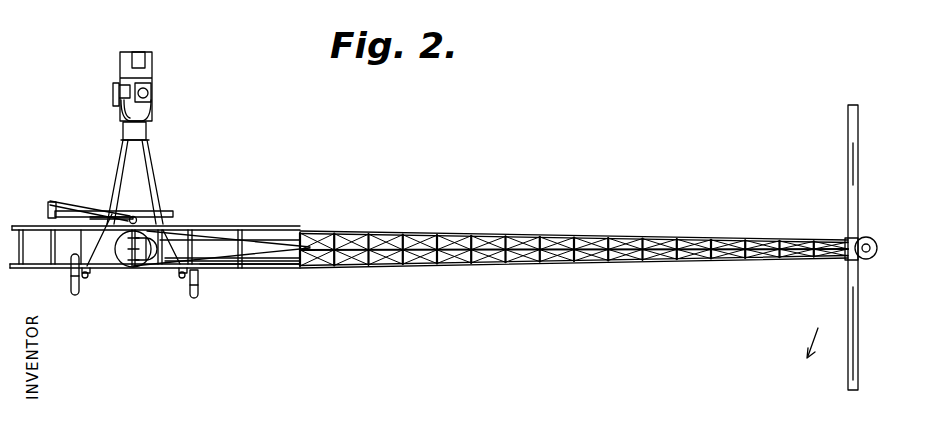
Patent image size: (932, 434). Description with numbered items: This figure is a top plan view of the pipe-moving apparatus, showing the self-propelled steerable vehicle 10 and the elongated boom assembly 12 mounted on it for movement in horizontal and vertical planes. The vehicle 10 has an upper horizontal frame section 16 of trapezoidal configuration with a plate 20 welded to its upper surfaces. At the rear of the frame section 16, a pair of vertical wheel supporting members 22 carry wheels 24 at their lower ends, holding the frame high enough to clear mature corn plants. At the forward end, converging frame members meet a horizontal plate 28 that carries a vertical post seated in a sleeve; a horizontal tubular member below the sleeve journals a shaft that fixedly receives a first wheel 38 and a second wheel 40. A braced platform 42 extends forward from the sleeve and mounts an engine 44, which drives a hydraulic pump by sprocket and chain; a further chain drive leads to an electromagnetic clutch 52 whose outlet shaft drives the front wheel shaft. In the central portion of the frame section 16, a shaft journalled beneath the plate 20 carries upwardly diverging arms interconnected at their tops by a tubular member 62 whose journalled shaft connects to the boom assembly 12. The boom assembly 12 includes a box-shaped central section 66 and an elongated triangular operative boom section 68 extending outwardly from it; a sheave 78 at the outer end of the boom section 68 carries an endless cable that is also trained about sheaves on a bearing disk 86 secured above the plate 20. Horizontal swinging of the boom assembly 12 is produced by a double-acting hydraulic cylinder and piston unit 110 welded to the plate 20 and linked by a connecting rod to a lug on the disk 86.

The self-propelled steerable vehicle 10 is at (166, 158).
The elongated boom assembly 12 is at (329, 211).
The upper horizontal frame section 16 is at (115, 271).
The plate 20 is at (160, 220).
The vertical wheel supporting members 22 is at (72, 283).
The wheels 24 is at (73, 296).
The horizontal plate 28 is at (126, 130).
The first wheel 38 is at (149, 111).
The second wheel 40 is at (119, 113).
The braced platform 42 is at (120, 54).
The engine 44 is at (145, 53).
The electromagnetic clutch 52 is at (117, 84).
The tubular member 62 is at (128, 250).
The central section 66 is at (227, 272).
The operative boom section 68 is at (575, 234).
The sheave 78 is at (873, 240).
The bearing disk 86 is at (116, 241).
The double-acting hydraulic cylinder and piston unit 110 is at (147, 209).